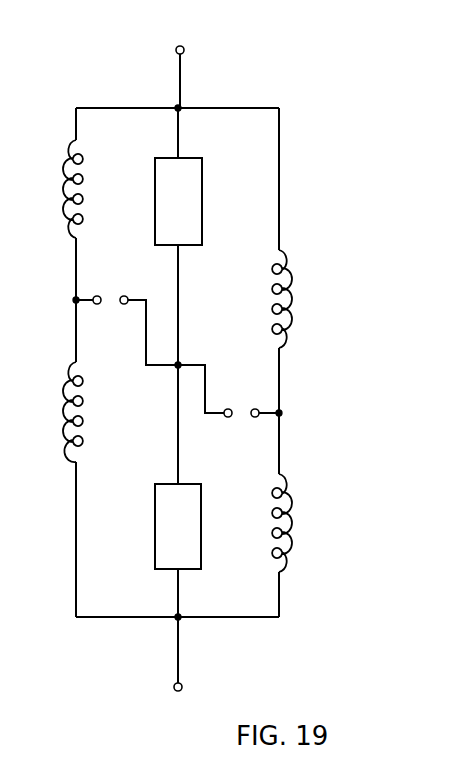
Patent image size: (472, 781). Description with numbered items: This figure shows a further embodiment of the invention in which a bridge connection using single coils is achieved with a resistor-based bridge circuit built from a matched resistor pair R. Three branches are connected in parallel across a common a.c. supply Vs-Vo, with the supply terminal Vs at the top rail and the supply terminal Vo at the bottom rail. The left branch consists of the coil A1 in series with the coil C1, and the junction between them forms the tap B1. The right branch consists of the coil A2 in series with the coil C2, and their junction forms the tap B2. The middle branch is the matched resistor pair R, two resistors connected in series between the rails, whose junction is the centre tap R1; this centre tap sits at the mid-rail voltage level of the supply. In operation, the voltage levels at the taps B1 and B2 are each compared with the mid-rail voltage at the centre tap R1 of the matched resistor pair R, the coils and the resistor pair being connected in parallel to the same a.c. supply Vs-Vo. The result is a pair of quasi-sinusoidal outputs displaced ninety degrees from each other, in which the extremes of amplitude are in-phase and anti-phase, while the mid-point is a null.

The a.c. supply terminal Vs is at (176, 58).
The a.c. supply terminal Vo is at (175, 672).
The coil A1 is at (56, 176).
The coil A2 is at (301, 299).
The coil C1 is at (55, 406).
The coil C2 is at (300, 523).
The tap B1 is at (93, 312).
The tap B2 is at (261, 429).
The centre tap R1 is at (180, 342).
The matched resistor pair R is at (178, 363).